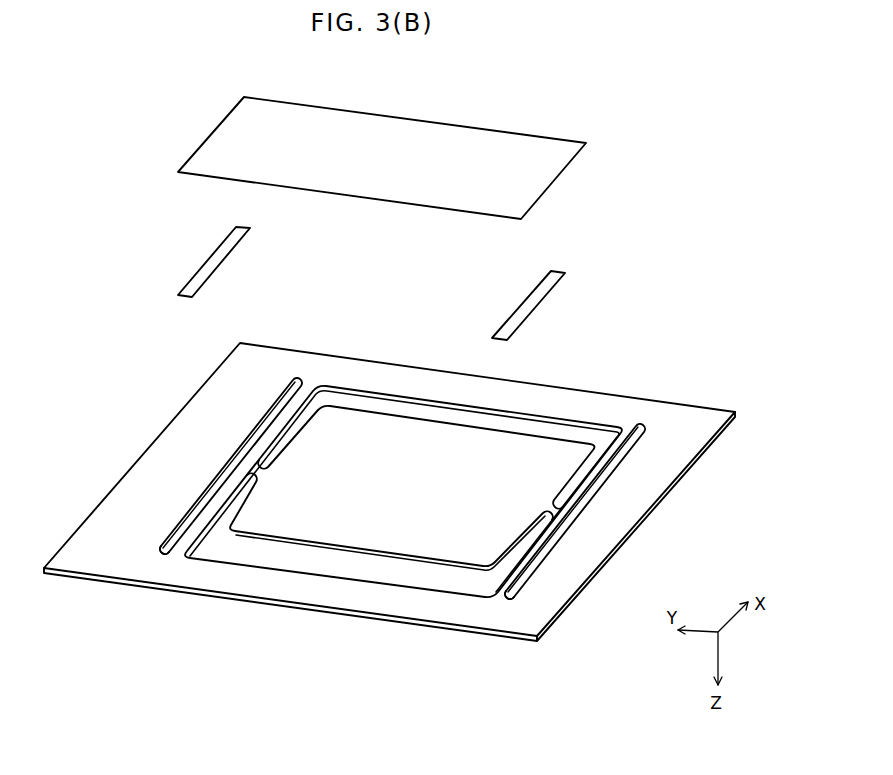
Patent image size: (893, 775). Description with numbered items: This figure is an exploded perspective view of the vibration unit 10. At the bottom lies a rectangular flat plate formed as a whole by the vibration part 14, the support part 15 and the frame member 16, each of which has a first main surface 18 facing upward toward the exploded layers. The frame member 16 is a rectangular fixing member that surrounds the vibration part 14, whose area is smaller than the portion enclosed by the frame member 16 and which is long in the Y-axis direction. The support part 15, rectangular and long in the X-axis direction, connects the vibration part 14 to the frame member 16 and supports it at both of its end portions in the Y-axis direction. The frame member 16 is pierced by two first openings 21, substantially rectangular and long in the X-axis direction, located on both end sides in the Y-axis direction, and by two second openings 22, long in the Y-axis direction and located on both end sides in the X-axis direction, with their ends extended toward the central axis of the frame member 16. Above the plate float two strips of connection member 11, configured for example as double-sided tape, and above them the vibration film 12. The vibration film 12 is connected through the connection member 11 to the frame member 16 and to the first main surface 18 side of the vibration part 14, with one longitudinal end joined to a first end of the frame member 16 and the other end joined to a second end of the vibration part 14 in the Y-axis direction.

The vibration unit 10 is at (192, 96).
The connection member 11 is at (215, 250).
The vibration film 12 is at (546, 194).
The vibration part 14 is at (365, 406).
The support part 15 is at (232, 472).
The frame member 16 is at (683, 425).
The first main surface 18 is at (416, 438).
The first opening 21 is at (159, 552).
The second opening 22 is at (557, 433).